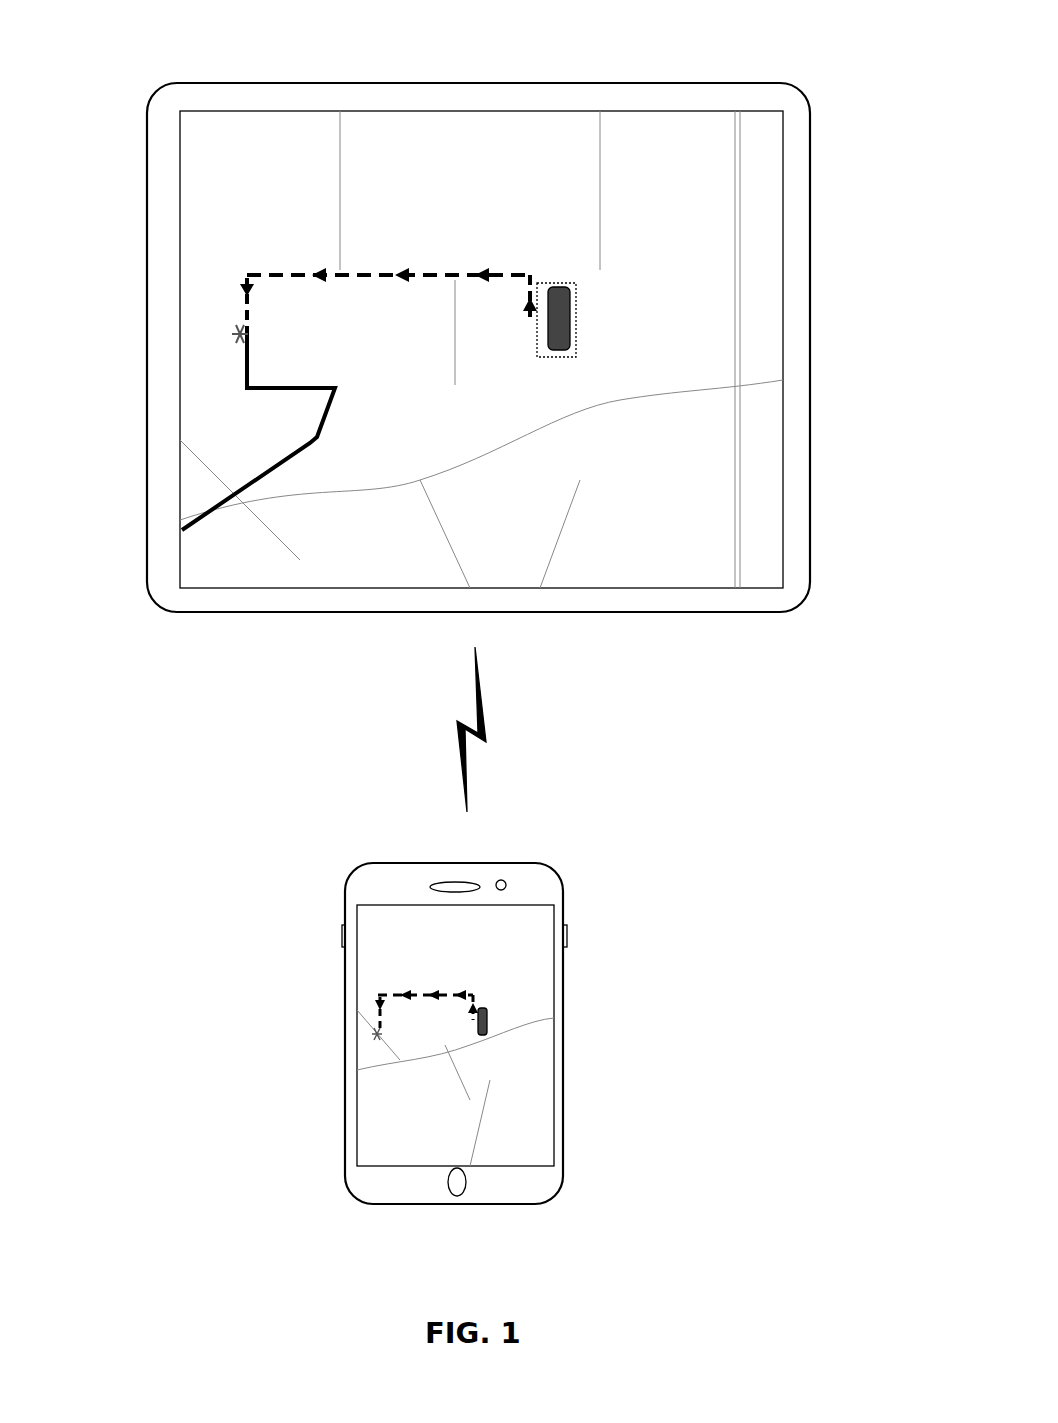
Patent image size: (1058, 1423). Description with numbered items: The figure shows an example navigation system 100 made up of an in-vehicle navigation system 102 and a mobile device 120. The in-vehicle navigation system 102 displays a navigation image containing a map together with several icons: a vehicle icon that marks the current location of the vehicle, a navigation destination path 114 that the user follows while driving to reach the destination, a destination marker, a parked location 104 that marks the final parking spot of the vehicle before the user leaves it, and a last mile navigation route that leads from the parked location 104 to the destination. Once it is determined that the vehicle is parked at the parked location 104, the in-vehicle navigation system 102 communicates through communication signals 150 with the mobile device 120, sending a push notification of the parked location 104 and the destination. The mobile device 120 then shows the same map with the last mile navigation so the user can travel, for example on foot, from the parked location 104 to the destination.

The navigation system 100 is at (212, 44).
The in-vehicle navigation system 102 is at (545, 82).
The parked location 104 is at (567, 286).
The navigation destination path 114 is at (247, 482).
The mobile device 120 is at (544, 864).
The communication signals 150 is at (486, 728).